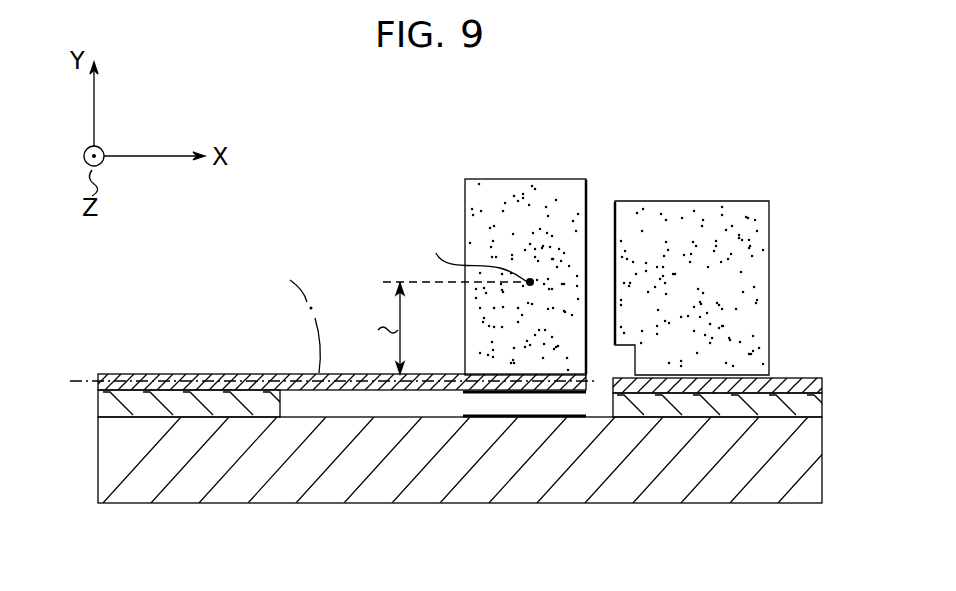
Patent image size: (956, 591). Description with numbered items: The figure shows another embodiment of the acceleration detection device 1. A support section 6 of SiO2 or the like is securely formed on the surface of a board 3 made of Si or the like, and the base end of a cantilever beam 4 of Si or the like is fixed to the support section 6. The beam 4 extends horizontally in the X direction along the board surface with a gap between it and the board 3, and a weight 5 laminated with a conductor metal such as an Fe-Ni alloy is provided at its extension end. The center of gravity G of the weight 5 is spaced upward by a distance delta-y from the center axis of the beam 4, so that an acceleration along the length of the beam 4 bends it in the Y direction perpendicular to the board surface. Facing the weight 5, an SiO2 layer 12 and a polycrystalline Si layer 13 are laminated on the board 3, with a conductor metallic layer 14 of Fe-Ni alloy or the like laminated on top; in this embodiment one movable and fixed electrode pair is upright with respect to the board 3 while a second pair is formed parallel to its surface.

The acceleration detection device 1 is at (363, 137).
The board 3 is at (531, 484).
The beam 4 is at (295, 372).
The weight 5 is at (506, 178).
The support section 6 is at (100, 400).
The SiO2 layer 12 is at (814, 406).
The polycrystalline Si layer 13 is at (812, 377).
The conductor metallic layer 14 is at (757, 292).